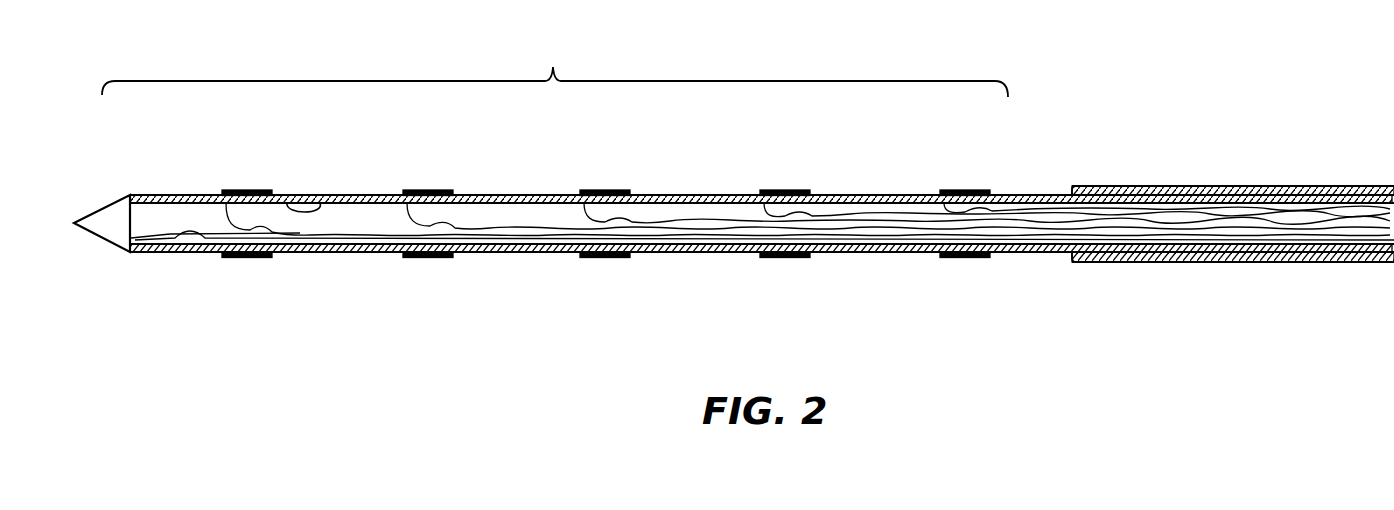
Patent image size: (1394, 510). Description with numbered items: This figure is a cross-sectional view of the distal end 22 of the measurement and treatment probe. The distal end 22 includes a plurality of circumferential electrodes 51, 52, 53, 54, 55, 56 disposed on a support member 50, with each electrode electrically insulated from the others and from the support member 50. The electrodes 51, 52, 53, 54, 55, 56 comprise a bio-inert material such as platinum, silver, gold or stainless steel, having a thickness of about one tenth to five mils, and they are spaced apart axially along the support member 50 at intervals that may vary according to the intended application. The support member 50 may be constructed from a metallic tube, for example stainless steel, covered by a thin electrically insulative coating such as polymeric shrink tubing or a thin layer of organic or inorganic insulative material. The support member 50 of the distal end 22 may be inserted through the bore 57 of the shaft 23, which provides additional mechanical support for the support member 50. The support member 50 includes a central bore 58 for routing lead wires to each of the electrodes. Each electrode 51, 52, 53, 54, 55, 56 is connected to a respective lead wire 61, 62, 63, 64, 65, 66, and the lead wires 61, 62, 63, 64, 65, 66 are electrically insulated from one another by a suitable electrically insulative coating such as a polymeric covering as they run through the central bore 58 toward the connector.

The distal end 22 is at (555, 63).
The shaft 23 is at (1265, 186).
The support member 50 is at (518, 195).
The electrode 51 is at (100, 193).
The electrode 52 is at (246, 190).
The electrode 53 is at (424, 190).
The electrode 54 is at (603, 190).
The electrode 55 is at (780, 190).
The electrode 56 is at (968, 190).
The bore 57 is at (1068, 190).
The central bore 58 is at (300, 200).
The lead wire 61 is at (185, 232).
The lead wire 62 is at (270, 225).
The lead wire 63 is at (451, 225).
The lead wire 64 is at (630, 222).
The lead wire 65 is at (816, 225).
The lead wire 66 is at (956, 225).